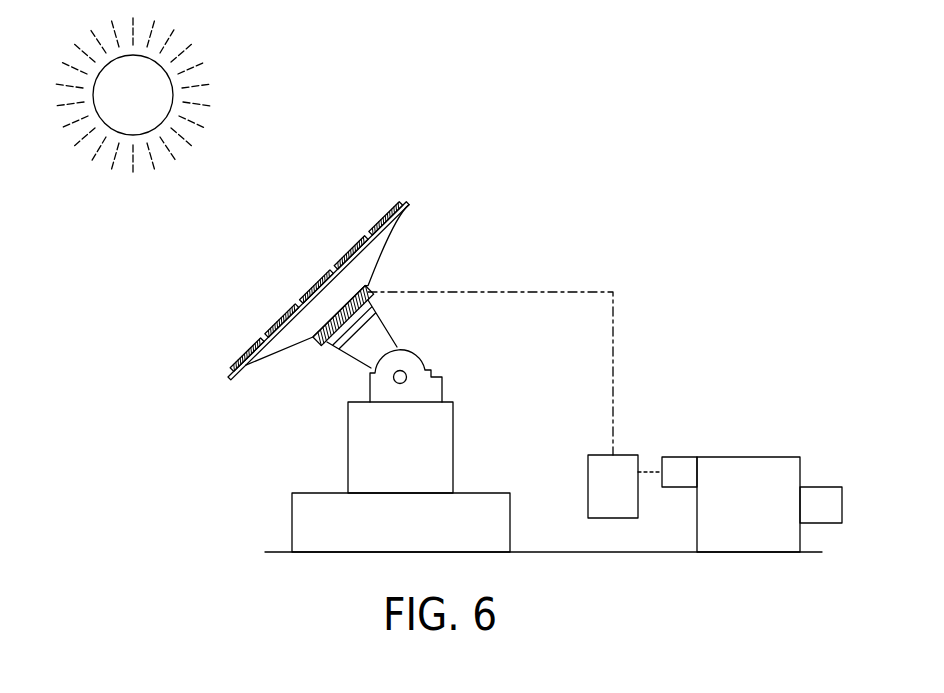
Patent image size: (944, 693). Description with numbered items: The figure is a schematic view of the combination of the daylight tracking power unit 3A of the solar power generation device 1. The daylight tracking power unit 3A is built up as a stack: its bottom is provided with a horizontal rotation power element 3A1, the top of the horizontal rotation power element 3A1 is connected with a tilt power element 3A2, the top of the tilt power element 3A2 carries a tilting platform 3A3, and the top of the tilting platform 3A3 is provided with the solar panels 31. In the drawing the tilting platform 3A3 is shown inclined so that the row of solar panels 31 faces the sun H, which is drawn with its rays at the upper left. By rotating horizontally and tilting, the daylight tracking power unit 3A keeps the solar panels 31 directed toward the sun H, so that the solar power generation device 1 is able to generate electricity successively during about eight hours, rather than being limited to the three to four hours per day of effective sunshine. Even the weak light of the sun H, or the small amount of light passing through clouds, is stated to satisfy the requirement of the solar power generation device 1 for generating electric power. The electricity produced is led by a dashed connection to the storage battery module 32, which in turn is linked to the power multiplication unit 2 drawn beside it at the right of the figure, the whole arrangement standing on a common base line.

The solar power generation device 1 is at (668, 290).
The power multiplication unit 2 is at (760, 473).
The solar panel 31 is at (368, 220).
The storage battery module 32 is at (623, 467).
The daylight tracking power unit 3A is at (453, 447).
The horizontal rotation power element 3A1 is at (380, 468).
The tilt power element 3A2 is at (368, 383).
The tilting platform 3A3 is at (405, 203).
The sun H is at (150, 97).